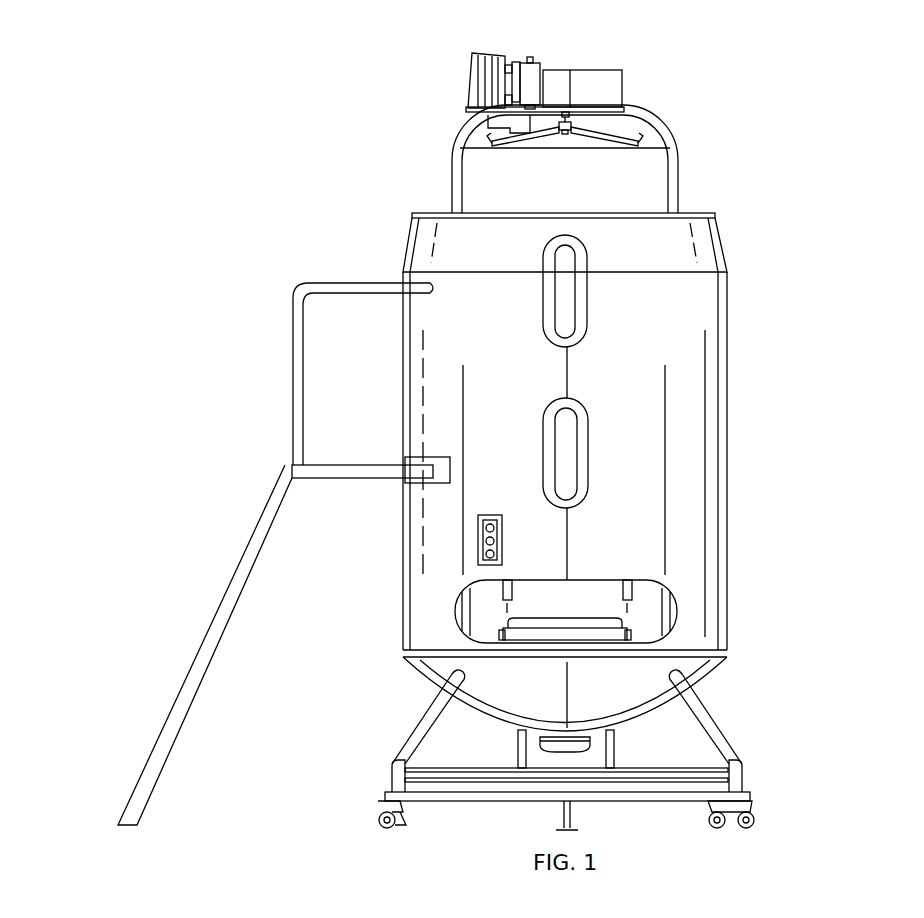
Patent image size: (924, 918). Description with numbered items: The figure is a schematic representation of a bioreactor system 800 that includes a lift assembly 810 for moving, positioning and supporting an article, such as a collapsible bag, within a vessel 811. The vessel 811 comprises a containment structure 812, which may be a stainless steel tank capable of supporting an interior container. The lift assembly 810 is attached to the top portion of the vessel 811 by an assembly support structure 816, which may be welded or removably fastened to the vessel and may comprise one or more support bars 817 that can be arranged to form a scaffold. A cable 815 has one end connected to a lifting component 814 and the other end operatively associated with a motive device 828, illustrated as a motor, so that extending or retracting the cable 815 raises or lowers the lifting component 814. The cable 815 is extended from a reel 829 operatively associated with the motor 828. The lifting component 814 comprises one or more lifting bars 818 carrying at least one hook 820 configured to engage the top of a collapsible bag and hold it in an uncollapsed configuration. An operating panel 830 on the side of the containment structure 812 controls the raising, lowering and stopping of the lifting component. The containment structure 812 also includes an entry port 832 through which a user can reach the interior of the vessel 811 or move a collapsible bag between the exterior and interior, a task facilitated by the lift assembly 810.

The system 800 is at (168, 106).
The lift assembly 810 is at (350, 42).
The vessel 811 is at (822, 207).
The containment structure 812 is at (702, 300).
The lifting component 814 is at (633, 122).
The cable 815 is at (568, 120).
The assembly support structure 816 is at (695, 185).
The support bar 817 is at (676, 155).
The lifting bar 818 is at (533, 131).
The hook 820 is at (490, 142).
The motive device 828 is at (470, 74).
The reel 829 is at (553, 78).
The operating panel 830 is at (475, 540).
The entry port 832 is at (652, 612).